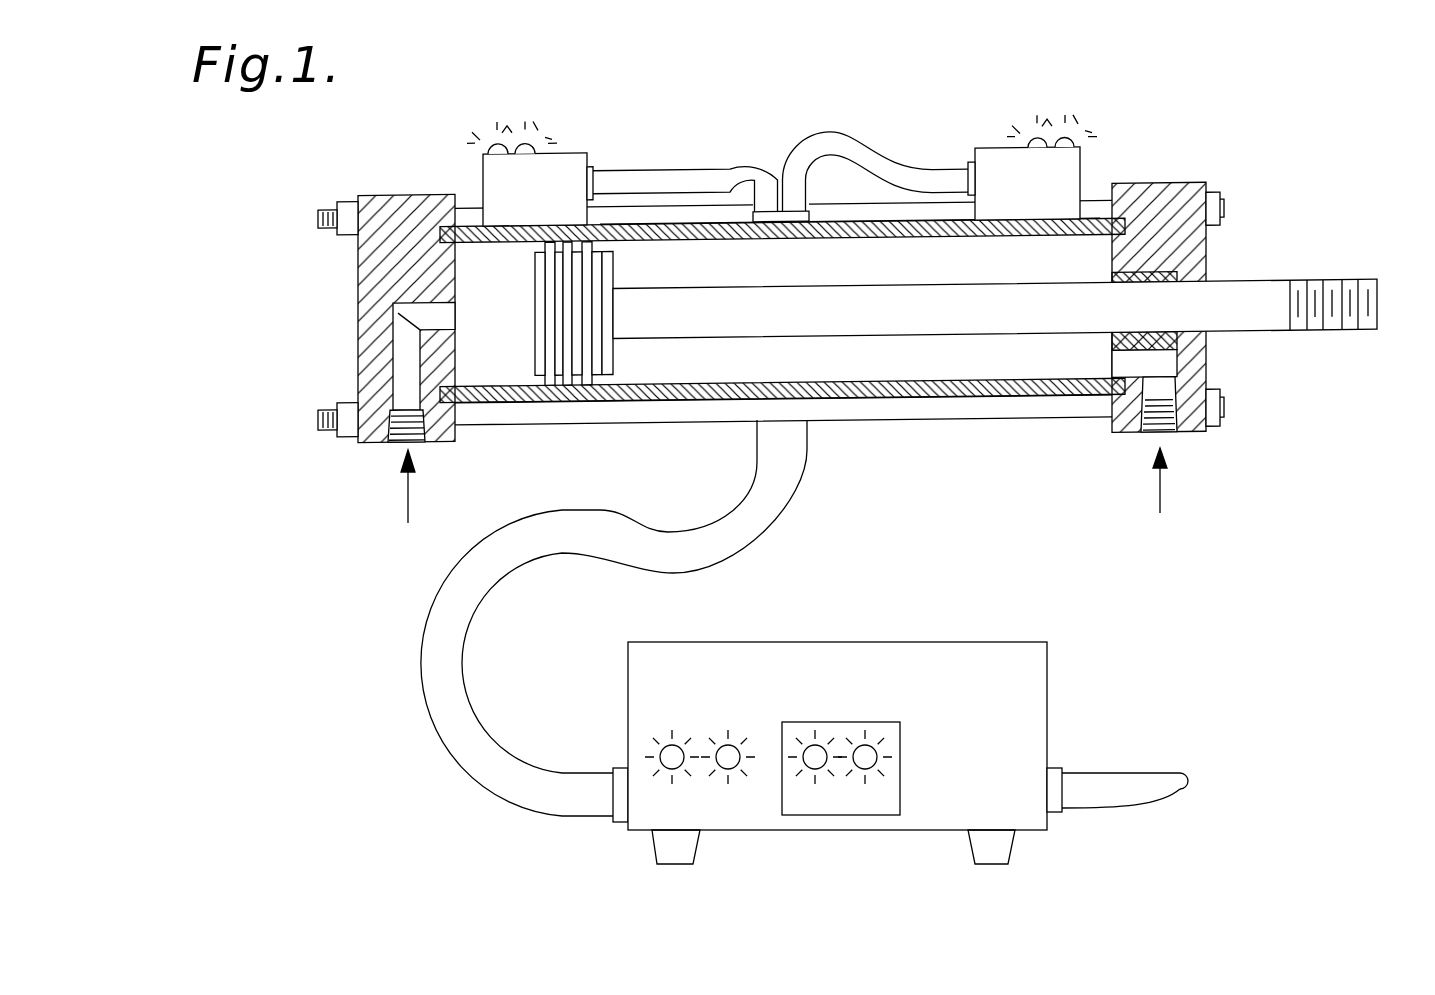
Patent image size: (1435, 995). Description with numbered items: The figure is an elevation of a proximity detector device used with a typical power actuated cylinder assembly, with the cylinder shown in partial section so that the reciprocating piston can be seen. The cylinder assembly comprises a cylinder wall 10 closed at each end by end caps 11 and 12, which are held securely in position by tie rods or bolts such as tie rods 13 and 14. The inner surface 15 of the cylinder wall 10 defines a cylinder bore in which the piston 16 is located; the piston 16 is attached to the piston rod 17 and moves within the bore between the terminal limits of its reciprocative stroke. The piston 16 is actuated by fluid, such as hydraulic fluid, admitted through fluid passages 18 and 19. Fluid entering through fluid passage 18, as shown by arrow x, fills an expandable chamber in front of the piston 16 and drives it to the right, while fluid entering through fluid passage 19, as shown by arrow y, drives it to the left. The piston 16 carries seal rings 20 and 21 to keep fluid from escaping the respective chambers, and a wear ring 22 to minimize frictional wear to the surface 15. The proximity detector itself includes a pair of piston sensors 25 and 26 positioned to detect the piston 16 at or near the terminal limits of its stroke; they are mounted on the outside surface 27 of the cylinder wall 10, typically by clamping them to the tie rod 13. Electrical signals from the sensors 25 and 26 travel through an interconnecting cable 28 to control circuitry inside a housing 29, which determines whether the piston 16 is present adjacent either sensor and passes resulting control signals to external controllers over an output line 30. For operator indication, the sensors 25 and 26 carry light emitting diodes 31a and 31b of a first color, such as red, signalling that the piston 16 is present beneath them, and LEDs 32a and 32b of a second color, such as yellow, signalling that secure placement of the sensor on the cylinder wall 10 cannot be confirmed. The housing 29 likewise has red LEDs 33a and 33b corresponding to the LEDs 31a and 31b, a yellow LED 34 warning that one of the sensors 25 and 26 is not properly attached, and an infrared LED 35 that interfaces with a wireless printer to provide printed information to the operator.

The cylinder wall 10 is at (862, 412).
The end cap 11 is at (367, 268).
The end cap 12 is at (1208, 245).
The tie rod 13 is at (848, 207).
The tie rod 14 is at (927, 408).
The inner surface 15 is at (1017, 382).
The piston 16 is at (613, 365).
The piston rod 17 is at (1265, 297).
The fluid passage 18 is at (400, 355).
The fluid passage 19 is at (1148, 363).
The seal ring 20 is at (548, 272).
The seal ring 21 is at (598, 272).
The wear ring 22 is at (575, 372).
The piston sensor 25 is at (593, 160).
The piston sensor 26 is at (1090, 163).
The outside surface 27 is at (887, 227).
The interconnecting cable 28 is at (412, 690).
The housing 29 is at (1037, 687).
The output line 30 is at (1120, 786).
The light emitting diode 31a is at (538, 140).
The light emitting diode 31b is at (1035, 137).
The LED 32a is at (492, 143).
The LED 32b is at (1068, 137).
The red LED 33a is at (815, 745).
The red LED 33b is at (865, 745).
The yellow LED 34 is at (728, 745).
The infrared LED 35 is at (672, 745).
The arrow x is at (407, 500).
The arrow y is at (1163, 483).